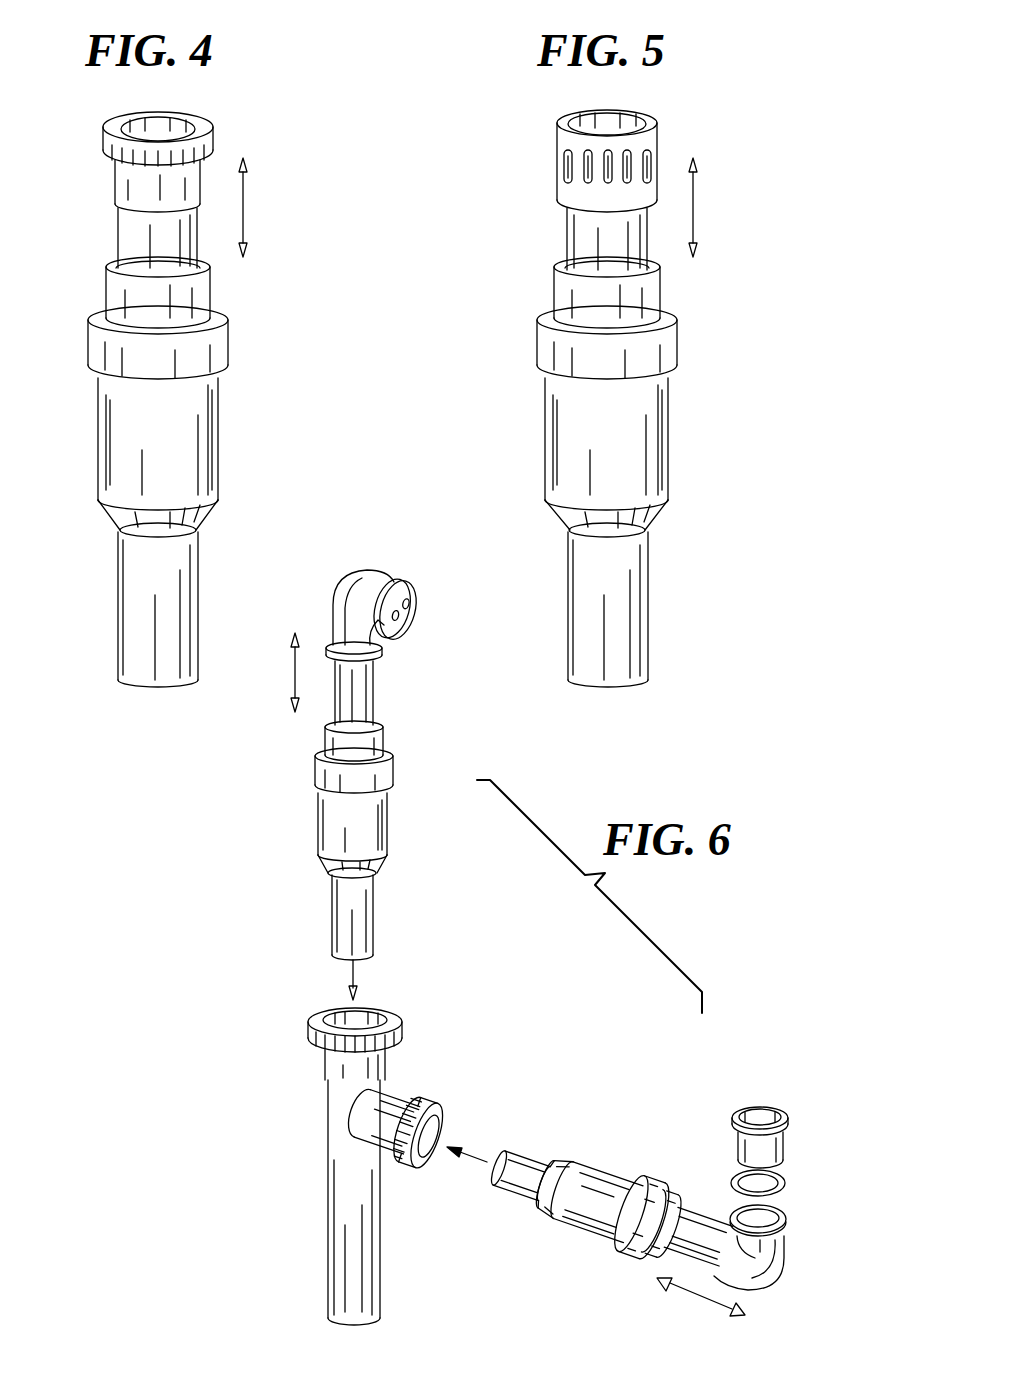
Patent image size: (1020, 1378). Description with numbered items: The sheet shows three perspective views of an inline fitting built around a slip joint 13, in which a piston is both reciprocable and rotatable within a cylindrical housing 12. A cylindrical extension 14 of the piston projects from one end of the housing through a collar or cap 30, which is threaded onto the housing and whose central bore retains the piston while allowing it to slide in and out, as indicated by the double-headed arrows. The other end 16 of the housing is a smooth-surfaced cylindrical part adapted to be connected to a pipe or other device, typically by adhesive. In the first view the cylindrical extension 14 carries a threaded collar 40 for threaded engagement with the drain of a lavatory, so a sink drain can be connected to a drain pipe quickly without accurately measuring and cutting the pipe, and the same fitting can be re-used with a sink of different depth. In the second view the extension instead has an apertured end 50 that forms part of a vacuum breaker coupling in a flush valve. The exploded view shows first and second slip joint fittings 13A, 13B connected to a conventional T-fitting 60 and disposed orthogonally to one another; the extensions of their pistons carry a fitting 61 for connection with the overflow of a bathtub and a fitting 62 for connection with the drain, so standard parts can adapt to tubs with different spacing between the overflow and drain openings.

In FIG. 4, the cylindrical housing 12 is at (200, 438).
In FIG. 4, the slip joint 13 is at (78, 432).
In FIG. 5, the slip joint 13 is at (506, 428).
In FIG. 6, the first slip joint fitting 13A is at (627, 1164).
In FIG. 6, the second slip joint fitting 13B is at (302, 836).
In FIG. 4, the cylindrical extension 14 is at (116, 228).
In FIG. 5, the cylindrical extension 14 is at (588, 246).
In FIG. 4, the other end of the housing 16 is at (130, 594).
In FIG. 4, the collar or cap 30 is at (222, 334).
In FIG. 4, the threaded collar 40 is at (102, 140).
In FIG. 5, the apertured end 50 is at (560, 143).
In FIG. 6, the T-fitting 60 is at (305, 1164).
In FIG. 6, the fitting 61 is at (404, 622).
In FIG. 6, the fitting 62 is at (792, 1148).